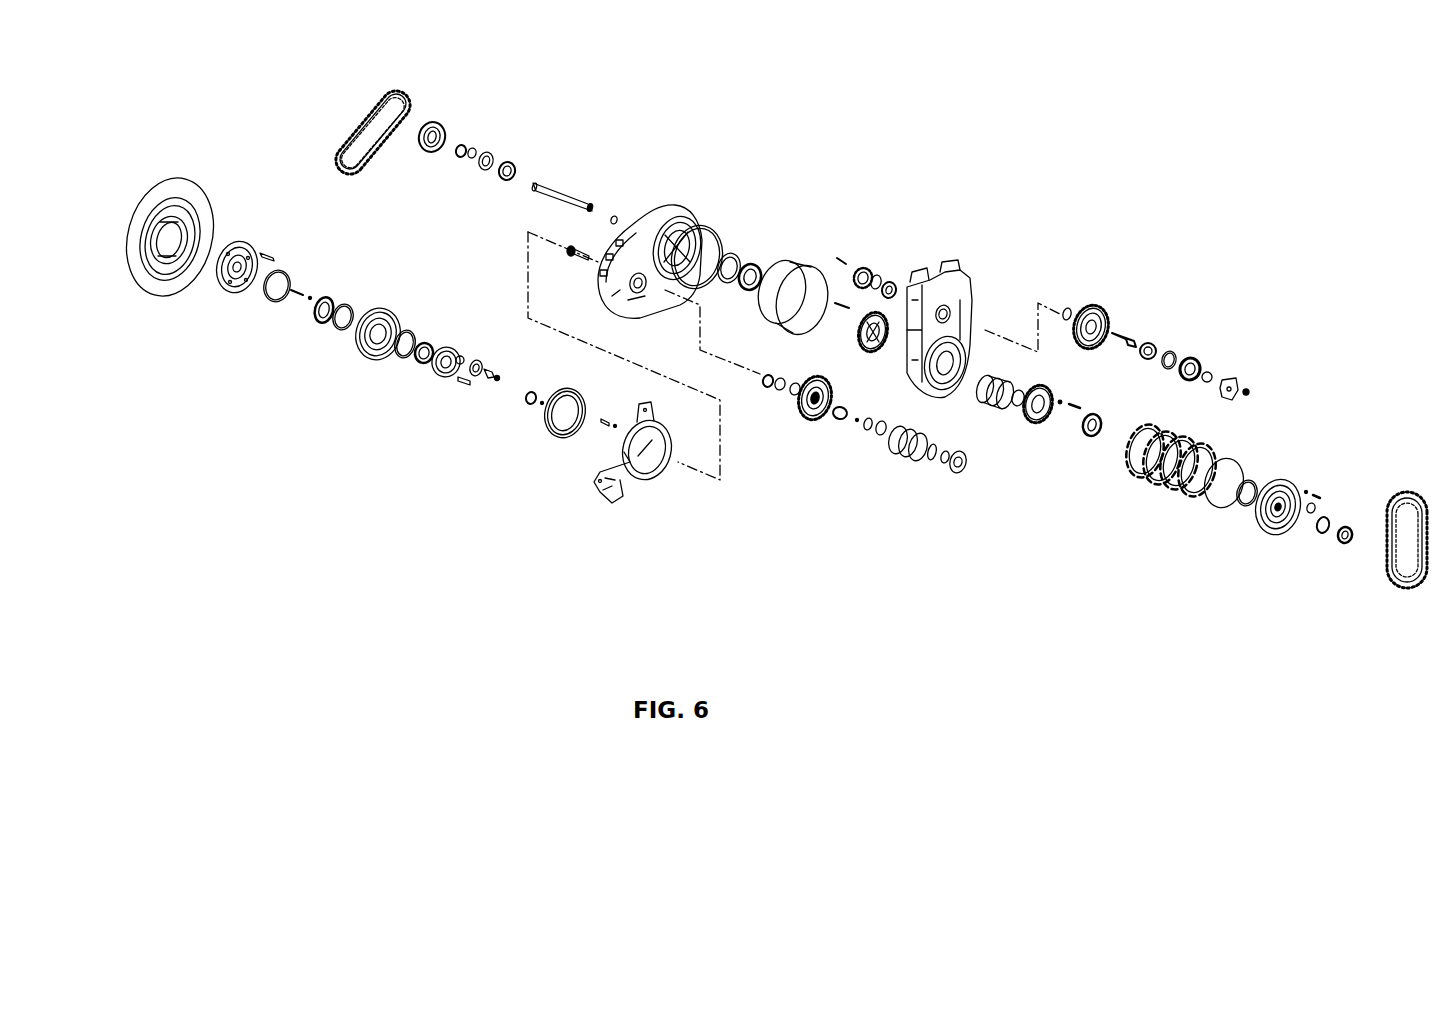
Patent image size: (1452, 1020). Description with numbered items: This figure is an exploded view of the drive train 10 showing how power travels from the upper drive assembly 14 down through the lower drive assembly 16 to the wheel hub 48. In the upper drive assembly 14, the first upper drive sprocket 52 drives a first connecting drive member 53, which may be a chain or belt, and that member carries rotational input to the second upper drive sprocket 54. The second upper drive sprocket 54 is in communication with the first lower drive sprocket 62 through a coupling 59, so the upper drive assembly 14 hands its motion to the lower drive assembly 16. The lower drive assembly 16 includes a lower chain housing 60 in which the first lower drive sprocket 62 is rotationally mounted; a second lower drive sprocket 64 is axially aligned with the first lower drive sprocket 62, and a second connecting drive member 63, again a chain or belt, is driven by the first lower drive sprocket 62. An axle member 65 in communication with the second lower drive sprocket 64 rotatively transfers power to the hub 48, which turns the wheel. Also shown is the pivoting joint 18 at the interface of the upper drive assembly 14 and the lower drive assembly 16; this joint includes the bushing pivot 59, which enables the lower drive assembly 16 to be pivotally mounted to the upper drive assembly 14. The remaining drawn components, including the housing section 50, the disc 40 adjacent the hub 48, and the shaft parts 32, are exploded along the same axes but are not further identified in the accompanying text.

The transmission assembly 10 is at (926, 202).
The upper drive assembly 14 is at (997, 296).
The lower drive assembly 16 is at (707, 199).
The pivoting joint 18 is at (816, 240).
The output shaft assembly 32 is at (1174, 330).
The flywheel disc 40 is at (151, 188).
The hub 48 is at (186, 319).
The gear housing 50 is at (956, 300).
The first upper drive sprocket 52 is at (1097, 304).
The first connecting drive member 53 is at (1407, 495).
The second upper drive sprocket 54 is at (1051, 420).
The coupling 59 is at (1011, 415).
The lower chain housing 60 is at (655, 212).
The first lower drive sprocket 62 is at (884, 347).
The second connecting drive member 63 is at (398, 95).
The second lower drive sprocket 64 is at (827, 425).
The axle member 65 is at (586, 259).